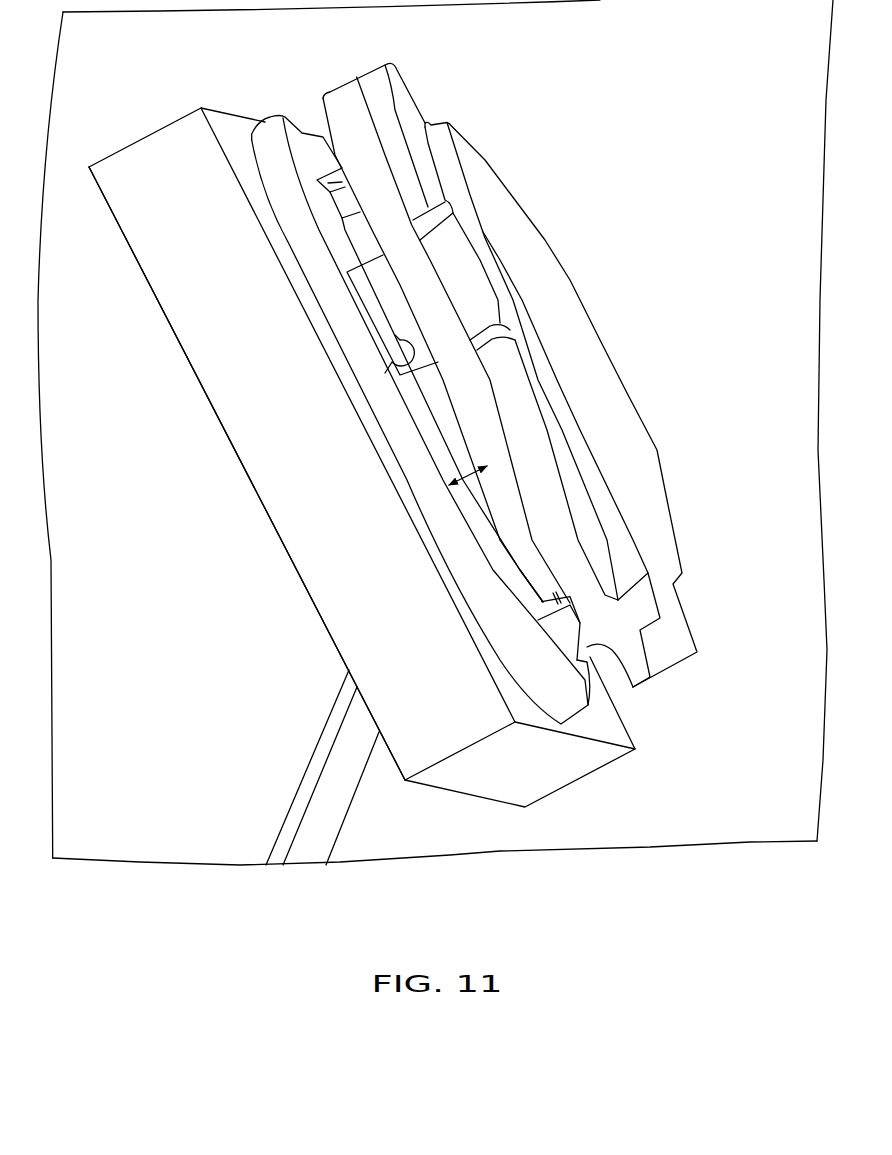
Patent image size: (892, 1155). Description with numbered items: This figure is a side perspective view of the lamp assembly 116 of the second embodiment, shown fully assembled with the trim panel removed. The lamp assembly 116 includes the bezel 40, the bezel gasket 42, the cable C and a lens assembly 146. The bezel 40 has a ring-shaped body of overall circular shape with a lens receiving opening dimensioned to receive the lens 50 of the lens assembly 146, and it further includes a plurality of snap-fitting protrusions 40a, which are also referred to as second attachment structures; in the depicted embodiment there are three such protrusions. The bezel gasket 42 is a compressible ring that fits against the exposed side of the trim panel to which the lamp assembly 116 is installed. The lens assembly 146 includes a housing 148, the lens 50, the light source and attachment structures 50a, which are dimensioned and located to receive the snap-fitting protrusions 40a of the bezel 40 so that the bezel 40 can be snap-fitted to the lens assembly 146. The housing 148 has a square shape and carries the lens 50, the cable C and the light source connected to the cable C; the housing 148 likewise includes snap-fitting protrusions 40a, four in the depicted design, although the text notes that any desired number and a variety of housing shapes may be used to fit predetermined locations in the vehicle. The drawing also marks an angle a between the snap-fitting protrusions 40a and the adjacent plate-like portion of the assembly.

The lamp assembly 116 is at (466, 380).
The lens assembly 146 is at (359, 437).
The housing 148 is at (172, 277).
The cable C is at (307, 755).
The bezel 40 is at (391, 380).
The bezel gasket 42 is at (345, 112).
The snap-fitting protrusions 40a is at (333, 182).
The lens 50 is at (499, 411).
The attachment structures 50a is at (385, 373).
The angle between fingers and plate a is at (460, 478).